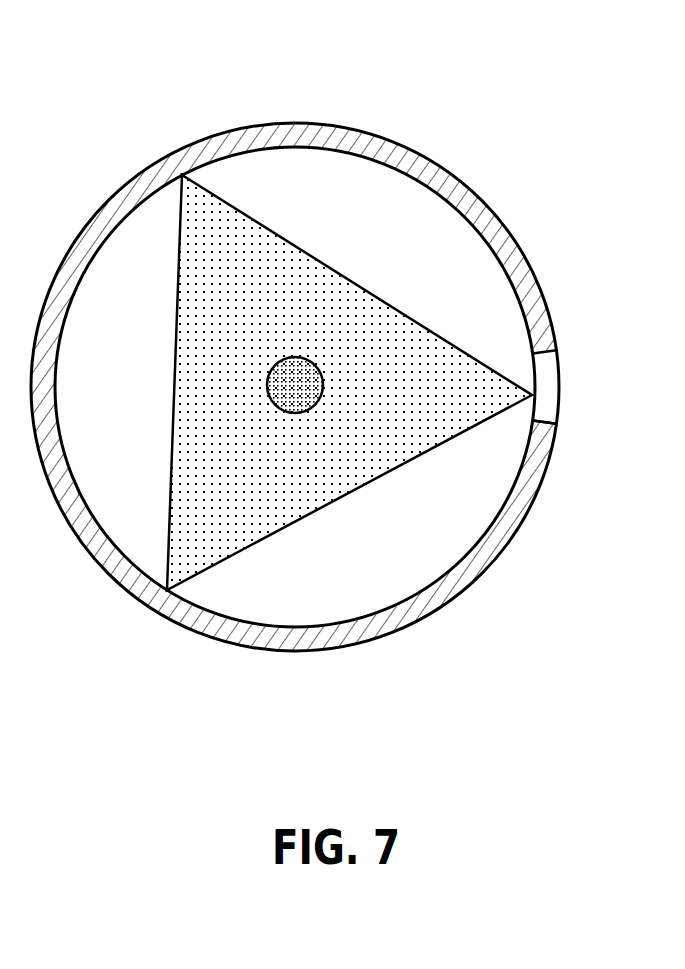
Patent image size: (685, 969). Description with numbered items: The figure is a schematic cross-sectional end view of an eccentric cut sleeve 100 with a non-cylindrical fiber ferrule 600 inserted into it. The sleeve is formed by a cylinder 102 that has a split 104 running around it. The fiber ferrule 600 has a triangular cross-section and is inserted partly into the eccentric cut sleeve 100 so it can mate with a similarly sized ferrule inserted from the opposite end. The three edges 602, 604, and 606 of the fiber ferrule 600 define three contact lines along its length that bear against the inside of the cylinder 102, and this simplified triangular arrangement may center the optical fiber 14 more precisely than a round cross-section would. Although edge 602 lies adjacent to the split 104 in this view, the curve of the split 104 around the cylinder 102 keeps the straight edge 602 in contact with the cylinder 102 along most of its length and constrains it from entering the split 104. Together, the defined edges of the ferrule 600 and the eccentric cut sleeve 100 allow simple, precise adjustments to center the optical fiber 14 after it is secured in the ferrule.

The eccentric cut sleeve 100 is at (214, 120).
The cylinder 102 is at (461, 180).
The split 104 is at (568, 365).
The optical fiber 14 is at (322, 389).
The fiber ferrule 600 is at (233, 514).
The edge 602 is at (535, 396).
The edge 604 is at (182, 176).
The edge 606 is at (167, 590).